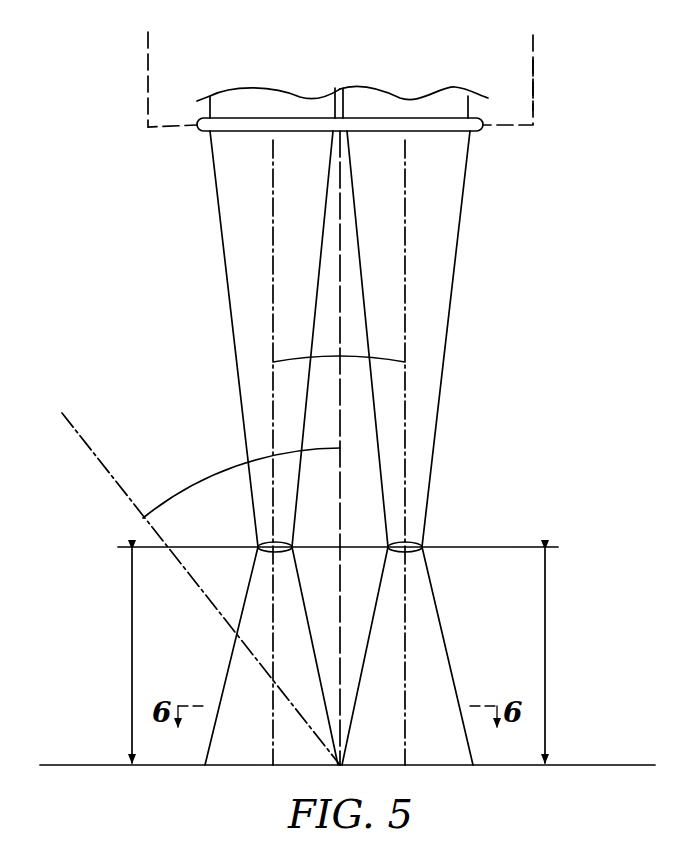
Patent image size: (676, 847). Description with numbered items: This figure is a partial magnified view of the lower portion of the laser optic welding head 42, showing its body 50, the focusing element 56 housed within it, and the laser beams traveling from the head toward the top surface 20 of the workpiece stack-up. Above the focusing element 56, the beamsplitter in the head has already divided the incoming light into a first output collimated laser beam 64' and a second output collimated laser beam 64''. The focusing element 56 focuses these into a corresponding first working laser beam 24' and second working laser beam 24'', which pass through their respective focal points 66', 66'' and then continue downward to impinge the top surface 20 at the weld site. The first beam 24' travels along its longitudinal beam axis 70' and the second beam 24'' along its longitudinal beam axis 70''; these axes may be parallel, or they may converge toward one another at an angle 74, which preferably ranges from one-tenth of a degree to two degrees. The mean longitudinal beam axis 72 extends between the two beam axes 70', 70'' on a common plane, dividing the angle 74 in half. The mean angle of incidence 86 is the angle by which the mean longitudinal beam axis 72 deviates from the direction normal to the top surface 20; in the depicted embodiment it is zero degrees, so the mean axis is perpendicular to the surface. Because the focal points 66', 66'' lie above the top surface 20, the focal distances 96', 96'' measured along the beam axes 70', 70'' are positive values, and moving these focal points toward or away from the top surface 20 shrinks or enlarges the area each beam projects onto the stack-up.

The body 50 is at (537, 72).
The laser optic welding head 42 is at (541, 95).
The focusing element 56 is at (297, 127).
The second output collimated laser beam 64'' is at (268, 74).
The first output collimated laser beam 64' is at (414, 74).
The second working laser beam 24'' is at (238, 448).
The first working laser beam 24' is at (442, 448).
The longitudinal beam axis of the second laser beam 70'' is at (207, 452).
The longitudinal beam axis of the first laser beam 70' is at (475, 452).
The angle 74 is at (297, 357).
The mean longitudinal beam axis 72 is at (340, 648).
The mean angle of incidence 86 is at (200, 479).
The focal point of the second laser beam 66'' is at (233, 534).
The focal point of the first laser beam 66' is at (454, 533).
The focal distance of the second laser beam 96'' is at (93, 656).
The focal distance of the first laser beam 96' is at (590, 656).
The top surface 20 is at (578, 765).